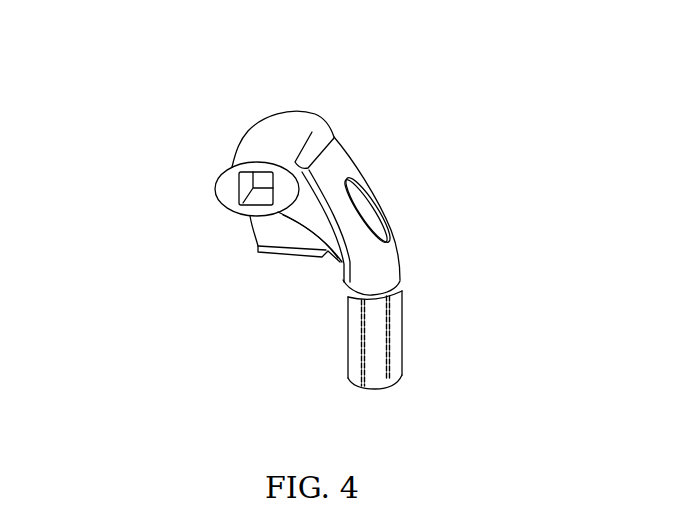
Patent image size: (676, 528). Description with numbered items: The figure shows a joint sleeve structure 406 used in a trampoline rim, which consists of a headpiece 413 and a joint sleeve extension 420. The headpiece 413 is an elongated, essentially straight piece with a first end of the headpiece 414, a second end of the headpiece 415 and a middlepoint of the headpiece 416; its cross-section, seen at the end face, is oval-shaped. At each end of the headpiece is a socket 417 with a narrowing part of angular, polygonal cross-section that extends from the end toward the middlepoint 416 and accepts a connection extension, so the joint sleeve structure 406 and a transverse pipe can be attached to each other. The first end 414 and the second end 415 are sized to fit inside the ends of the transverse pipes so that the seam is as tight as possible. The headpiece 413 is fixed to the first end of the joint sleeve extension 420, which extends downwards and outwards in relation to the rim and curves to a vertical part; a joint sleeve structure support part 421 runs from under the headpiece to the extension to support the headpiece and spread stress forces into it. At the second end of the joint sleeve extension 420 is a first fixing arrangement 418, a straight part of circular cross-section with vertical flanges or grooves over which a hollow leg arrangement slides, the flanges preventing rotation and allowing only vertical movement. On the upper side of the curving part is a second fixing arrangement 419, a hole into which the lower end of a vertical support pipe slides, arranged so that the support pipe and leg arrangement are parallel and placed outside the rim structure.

The joint sleeve structure 406 is at (109, 41).
The headpiece 413 is at (285, 130).
The first end of the headpiece 414 is at (231, 182).
The second end of the headpiece 415 is at (313, 114).
The middlepoint of the headpiece 416 is at (238, 136).
The socket 417 is at (242, 185).
The first fixing arrangement 418 is at (401, 326).
The second fixing arrangement 419 is at (372, 210).
The joint sleeve extension 420 is at (399, 258).
The joint sleeve structure support part 421 is at (273, 256).